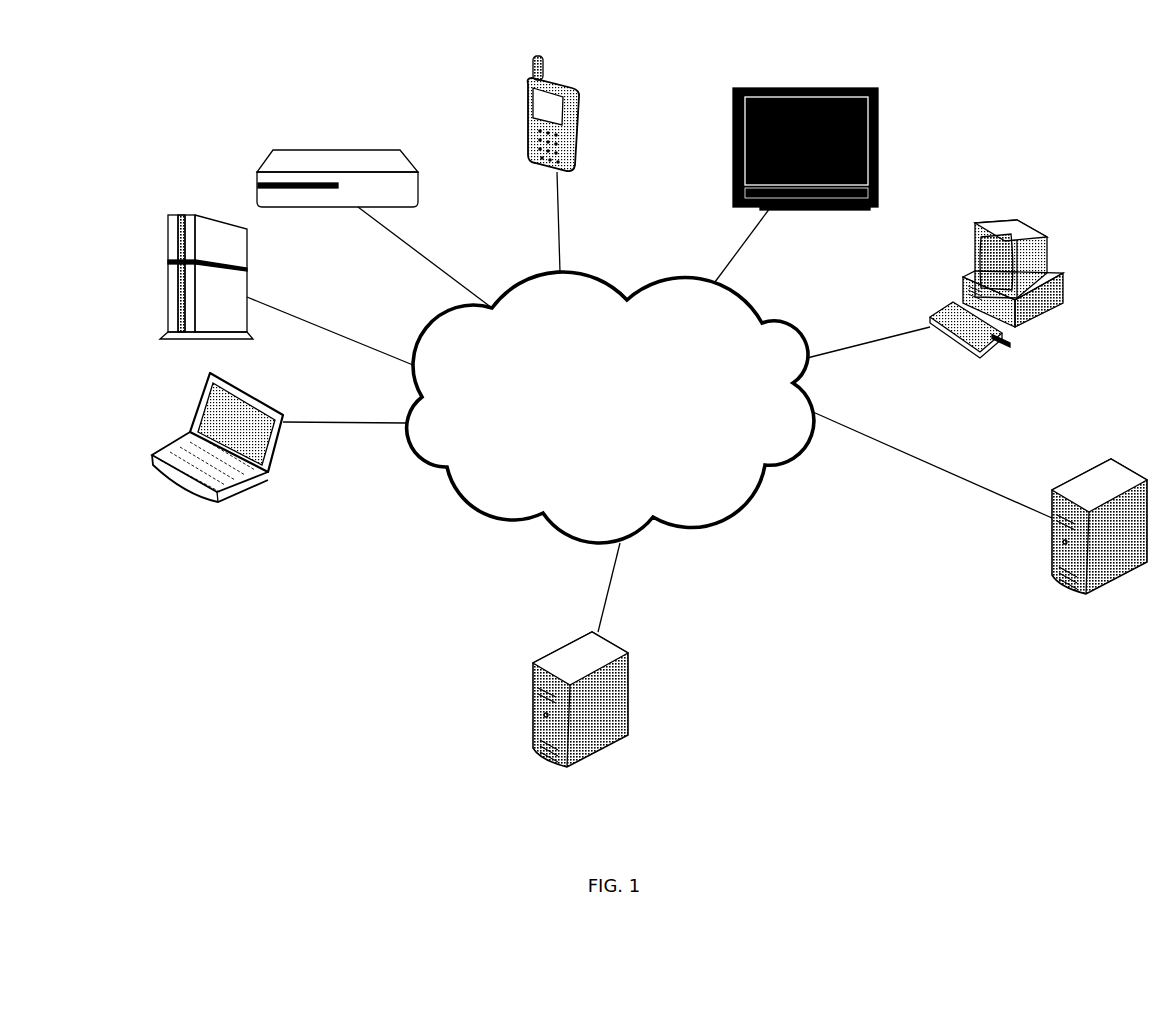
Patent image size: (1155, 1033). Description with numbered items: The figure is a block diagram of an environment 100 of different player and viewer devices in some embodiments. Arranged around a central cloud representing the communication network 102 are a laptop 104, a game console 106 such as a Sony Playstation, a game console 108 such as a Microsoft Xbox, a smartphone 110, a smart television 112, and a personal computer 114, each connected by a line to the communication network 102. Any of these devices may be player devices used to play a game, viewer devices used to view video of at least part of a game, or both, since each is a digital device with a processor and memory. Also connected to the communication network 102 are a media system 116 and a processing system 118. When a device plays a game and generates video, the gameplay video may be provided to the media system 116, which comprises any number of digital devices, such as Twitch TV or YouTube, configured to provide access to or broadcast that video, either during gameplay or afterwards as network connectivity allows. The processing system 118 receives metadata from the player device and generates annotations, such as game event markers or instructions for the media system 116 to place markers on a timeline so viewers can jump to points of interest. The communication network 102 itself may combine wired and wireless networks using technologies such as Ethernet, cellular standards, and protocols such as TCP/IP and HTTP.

The environment 100 is at (136, 160).
The communication network 102 is at (600, 433).
The laptop 104 is at (223, 502).
The game console 106 is at (178, 340).
The game console 108 is at (327, 207).
The smartphone 110 is at (568, 87).
The smart television 112 is at (820, 88).
The personal computer 114 is at (1028, 232).
The media system 116 is at (1108, 583).
The processing system 118 is at (593, 716).